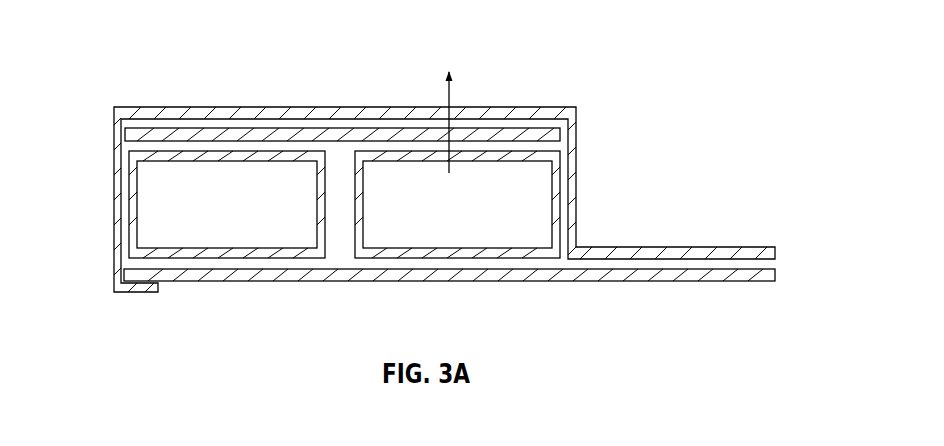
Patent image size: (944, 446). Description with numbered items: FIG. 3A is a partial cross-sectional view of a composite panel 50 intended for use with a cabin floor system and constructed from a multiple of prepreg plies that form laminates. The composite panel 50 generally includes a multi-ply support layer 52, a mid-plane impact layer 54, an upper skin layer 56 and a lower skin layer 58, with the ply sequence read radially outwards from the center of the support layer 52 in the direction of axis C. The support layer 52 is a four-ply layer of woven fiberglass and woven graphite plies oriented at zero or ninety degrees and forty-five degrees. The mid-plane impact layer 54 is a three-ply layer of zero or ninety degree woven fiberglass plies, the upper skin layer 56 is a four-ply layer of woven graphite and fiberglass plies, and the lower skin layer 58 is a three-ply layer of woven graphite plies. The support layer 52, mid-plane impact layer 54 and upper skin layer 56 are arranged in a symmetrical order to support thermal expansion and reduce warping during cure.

The composite panel 50 is at (563, 77).
The multi-ply support layer 52 is at (559, 170).
The mid-plane impact layer 54 is at (120, 133).
The upper skin layer 56 is at (351, 107).
The lower skin layer 58 is at (777, 275).